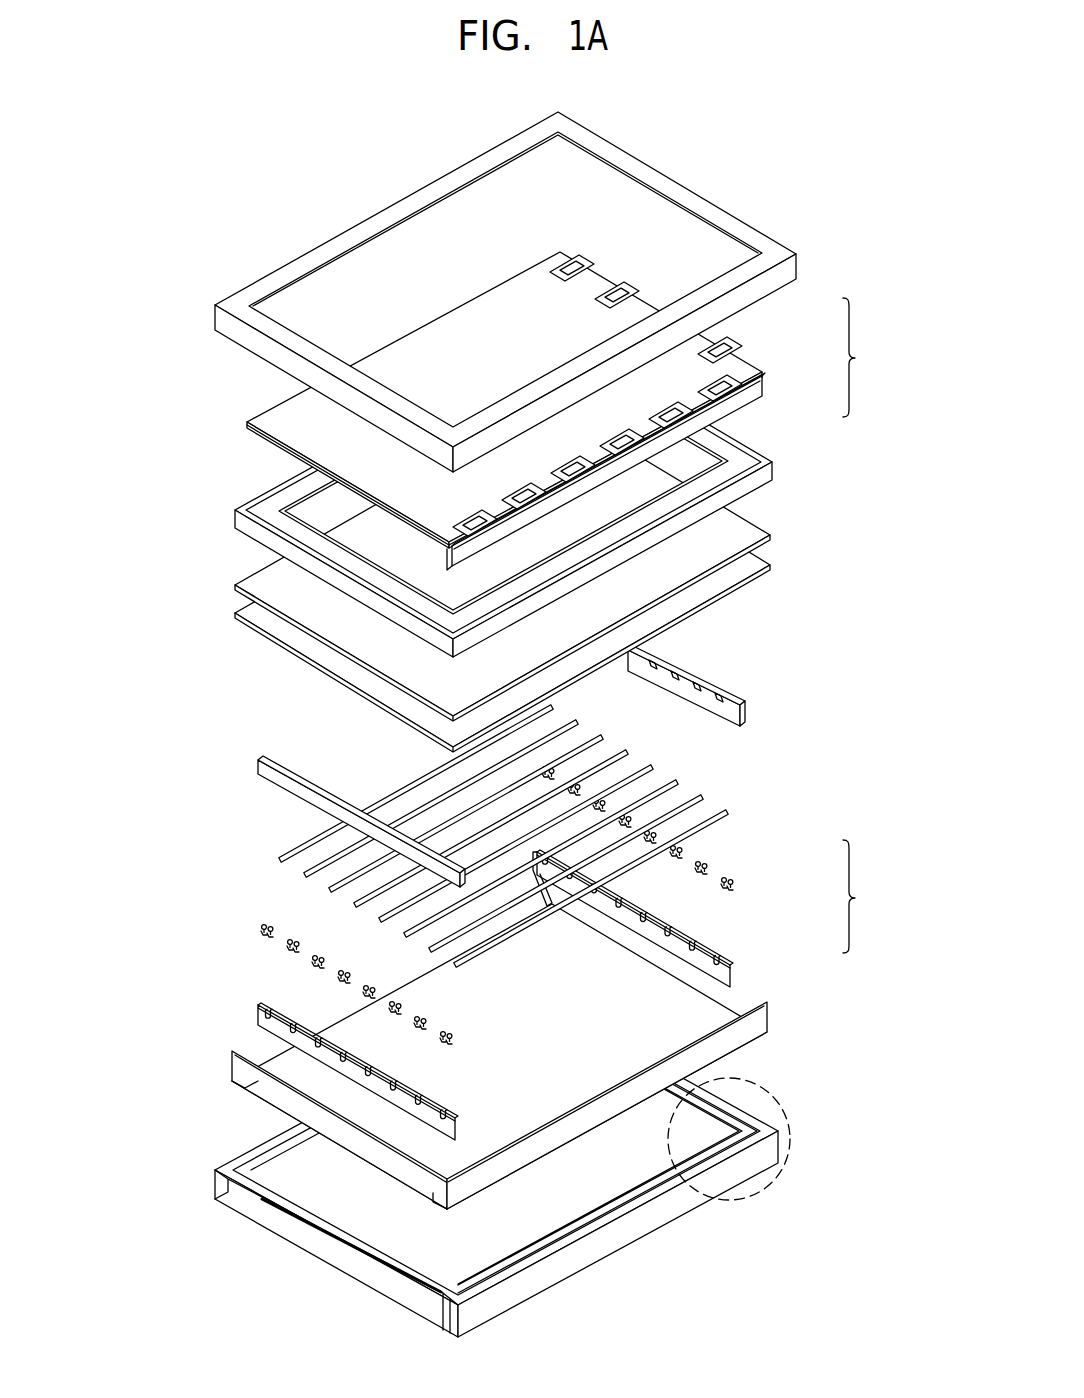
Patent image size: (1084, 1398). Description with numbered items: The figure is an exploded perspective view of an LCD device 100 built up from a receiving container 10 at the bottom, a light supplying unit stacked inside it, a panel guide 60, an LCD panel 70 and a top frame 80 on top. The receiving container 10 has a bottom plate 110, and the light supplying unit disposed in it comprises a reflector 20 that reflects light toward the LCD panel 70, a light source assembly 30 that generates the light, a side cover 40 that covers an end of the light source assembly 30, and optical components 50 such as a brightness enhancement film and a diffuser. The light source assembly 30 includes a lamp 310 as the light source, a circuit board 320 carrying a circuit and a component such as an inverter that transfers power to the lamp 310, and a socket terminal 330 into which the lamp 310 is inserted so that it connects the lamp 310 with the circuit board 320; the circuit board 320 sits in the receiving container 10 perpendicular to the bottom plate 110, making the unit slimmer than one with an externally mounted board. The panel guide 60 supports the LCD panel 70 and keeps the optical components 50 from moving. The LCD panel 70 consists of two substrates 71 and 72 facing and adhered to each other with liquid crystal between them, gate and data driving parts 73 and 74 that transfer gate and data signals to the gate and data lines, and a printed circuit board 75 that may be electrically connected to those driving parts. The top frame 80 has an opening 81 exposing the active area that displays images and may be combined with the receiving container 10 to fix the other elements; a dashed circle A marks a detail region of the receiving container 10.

The LCD device 100 is at (492, 100).
The receiving container 10 is at (520, 1166).
The bottom plate 110 is at (303, 1180).
The reflector 20 is at (770, 1017).
The light source assembly 30 is at (570, 922).
The lamp 310 is at (722, 818).
The circuit board 320 is at (726, 962).
The socket terminal 330 is at (736, 882).
The side cover 40 is at (698, 676).
The optical components 50 is at (776, 535).
The panel guide 60 is at (774, 465).
The LCD panel 70 is at (562, 411).
The substrate 71 is at (745, 360).
The substrate 72 is at (742, 352).
The gate driving part 73 is at (762, 379).
The data driving part 74 is at (738, 347).
The printed circuit board 75 is at (762, 389).
The top frame 80 is at (505, 292).
The opening 81 is at (430, 214).
The portion A is at (779, 1102).